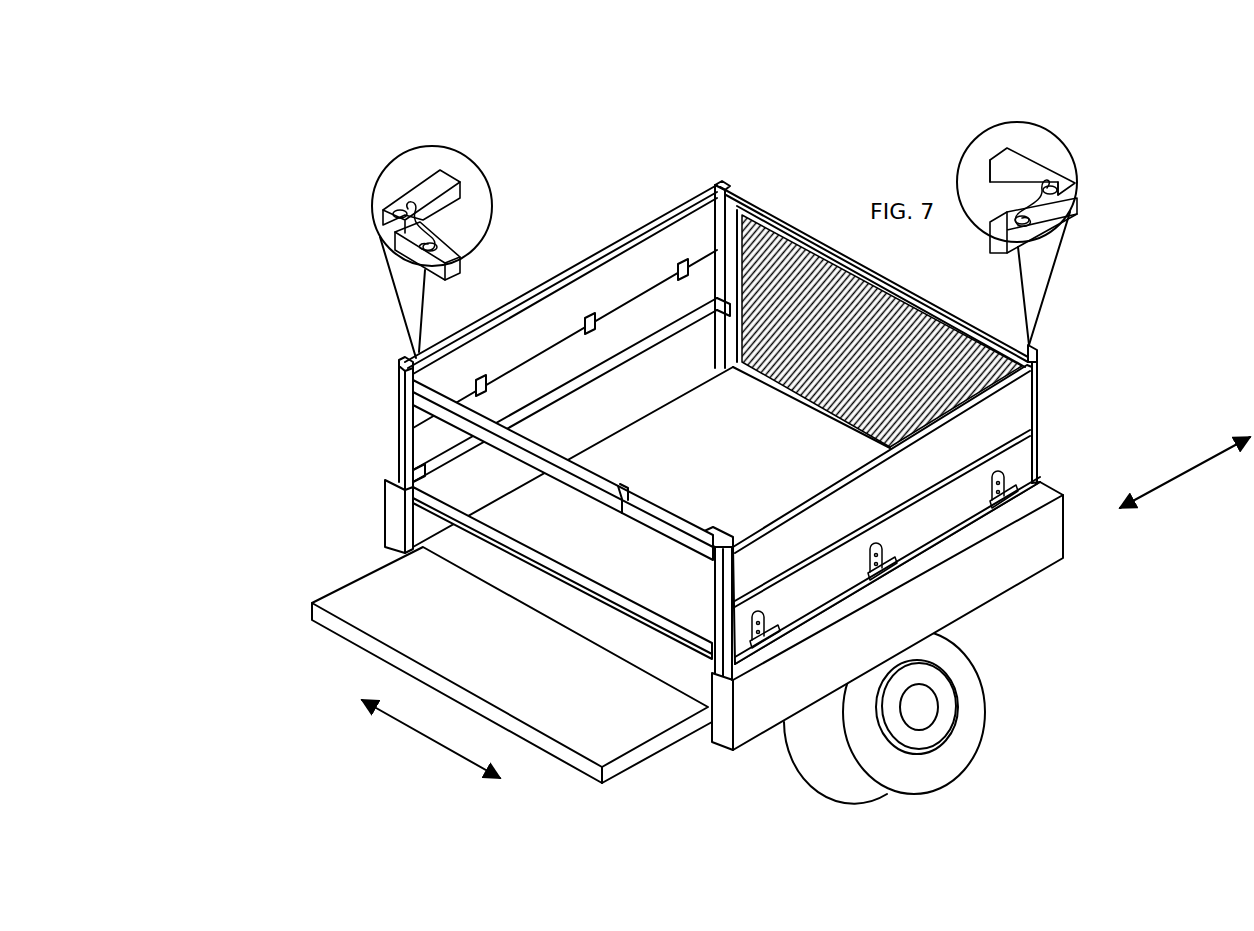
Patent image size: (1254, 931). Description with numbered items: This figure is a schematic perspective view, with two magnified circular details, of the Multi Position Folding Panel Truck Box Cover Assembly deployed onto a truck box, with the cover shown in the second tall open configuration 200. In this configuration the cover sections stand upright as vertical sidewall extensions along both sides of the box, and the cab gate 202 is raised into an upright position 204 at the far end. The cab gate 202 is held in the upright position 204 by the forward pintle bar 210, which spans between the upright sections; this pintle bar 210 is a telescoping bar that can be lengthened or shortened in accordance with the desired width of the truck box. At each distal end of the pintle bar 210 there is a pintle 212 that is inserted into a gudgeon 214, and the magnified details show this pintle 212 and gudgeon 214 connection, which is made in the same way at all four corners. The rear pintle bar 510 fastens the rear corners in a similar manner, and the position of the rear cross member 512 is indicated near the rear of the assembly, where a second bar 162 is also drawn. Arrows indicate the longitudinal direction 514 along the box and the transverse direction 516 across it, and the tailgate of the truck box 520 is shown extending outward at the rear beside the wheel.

The second tall open configuration 200 is at (666, 140).
The cab gate 202 is at (790, 272).
The upright position 204 is at (830, 128).
The forward pintle bar 210 is at (752, 205).
The pintle 212 is at (410, 205).
The gudgeon 214 is at (395, 210).
The rear pintle bar 510 is at (400, 410).
The lower rack rail 162 is at (428, 462).
The rear cross member 512 is at (477, 520).
The longitudinal direction 514 is at (1233, 455).
The transverse direction 516 is at (437, 743).
The tailgate of the truck box 520 is at (603, 713).